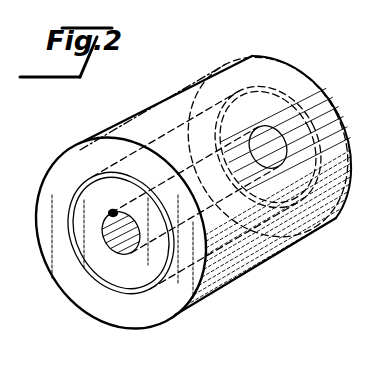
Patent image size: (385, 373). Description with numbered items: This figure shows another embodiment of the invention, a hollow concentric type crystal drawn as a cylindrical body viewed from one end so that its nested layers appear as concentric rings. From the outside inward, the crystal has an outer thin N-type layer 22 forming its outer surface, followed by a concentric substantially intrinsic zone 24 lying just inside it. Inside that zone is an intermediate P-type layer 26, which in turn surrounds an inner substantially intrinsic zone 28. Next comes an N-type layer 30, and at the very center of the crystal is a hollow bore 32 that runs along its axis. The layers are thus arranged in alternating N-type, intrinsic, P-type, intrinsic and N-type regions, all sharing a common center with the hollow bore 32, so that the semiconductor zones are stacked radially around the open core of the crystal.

The outer thin N-type layer 22 is at (167, 323).
The concentric substantially intrinsic zone 24 is at (50, 183).
The intermediate P-type layer 26 is at (68, 228).
The inner substantially intrinsic zone 28 is at (90, 258).
The N-type layer 30 is at (118, 252).
The hollow bore 32 is at (113, 211).